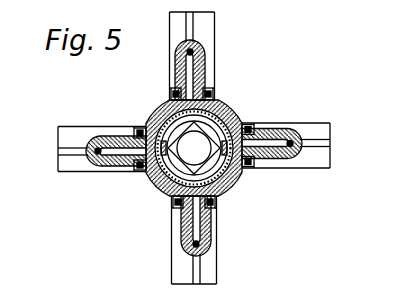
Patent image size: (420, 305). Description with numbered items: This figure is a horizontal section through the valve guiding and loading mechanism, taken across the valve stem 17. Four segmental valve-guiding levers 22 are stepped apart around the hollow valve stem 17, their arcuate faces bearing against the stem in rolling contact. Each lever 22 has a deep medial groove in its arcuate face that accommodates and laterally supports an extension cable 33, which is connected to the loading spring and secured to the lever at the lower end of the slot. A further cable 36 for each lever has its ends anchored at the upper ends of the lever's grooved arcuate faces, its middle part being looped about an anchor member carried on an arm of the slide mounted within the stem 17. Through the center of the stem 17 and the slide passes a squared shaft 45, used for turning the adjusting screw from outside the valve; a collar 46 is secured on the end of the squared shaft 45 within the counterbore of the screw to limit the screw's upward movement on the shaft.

The segmental valve-guiding lever 22 is at (172, 40).
The extension cable 33 is at (196, 52).
The cable 36 is at (216, 90).
The valve stem 17 is at (162, 188).
The collar 46 is at (158, 120).
The squared shaft 45 is at (197, 150).